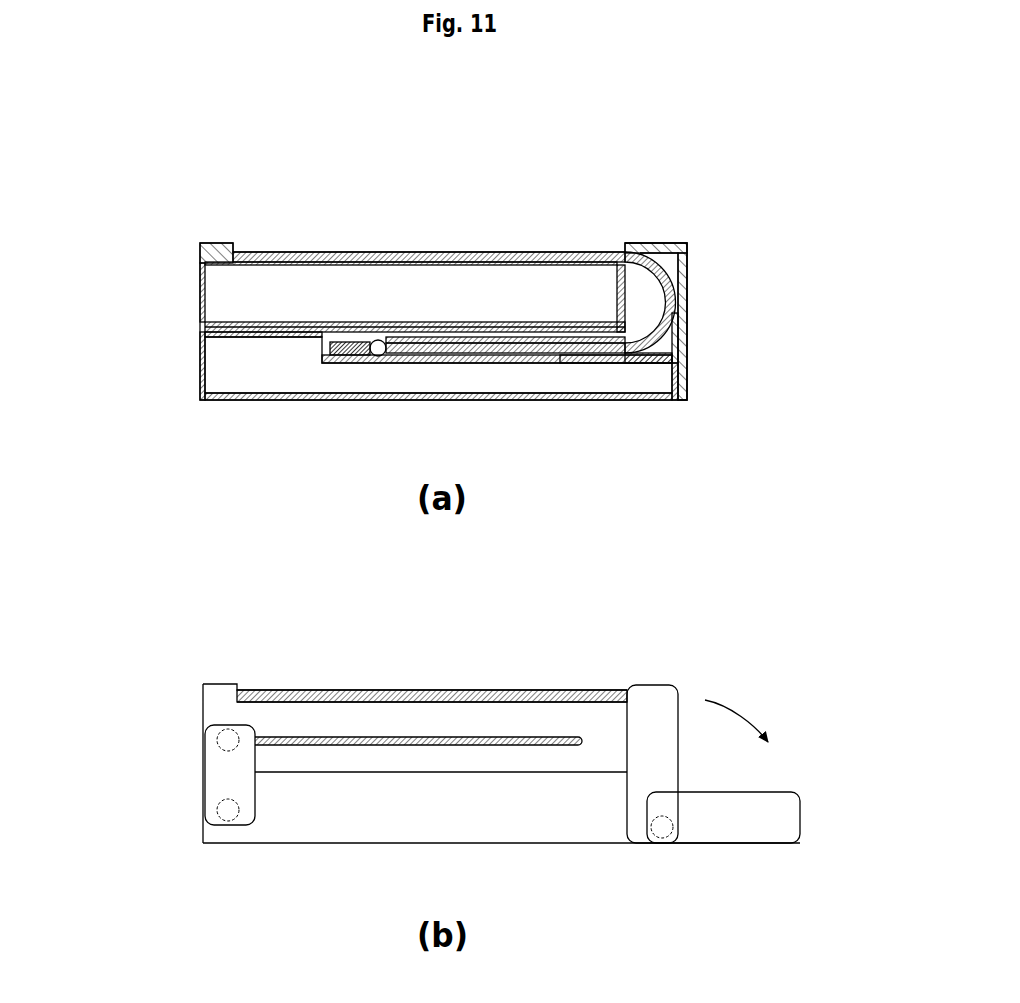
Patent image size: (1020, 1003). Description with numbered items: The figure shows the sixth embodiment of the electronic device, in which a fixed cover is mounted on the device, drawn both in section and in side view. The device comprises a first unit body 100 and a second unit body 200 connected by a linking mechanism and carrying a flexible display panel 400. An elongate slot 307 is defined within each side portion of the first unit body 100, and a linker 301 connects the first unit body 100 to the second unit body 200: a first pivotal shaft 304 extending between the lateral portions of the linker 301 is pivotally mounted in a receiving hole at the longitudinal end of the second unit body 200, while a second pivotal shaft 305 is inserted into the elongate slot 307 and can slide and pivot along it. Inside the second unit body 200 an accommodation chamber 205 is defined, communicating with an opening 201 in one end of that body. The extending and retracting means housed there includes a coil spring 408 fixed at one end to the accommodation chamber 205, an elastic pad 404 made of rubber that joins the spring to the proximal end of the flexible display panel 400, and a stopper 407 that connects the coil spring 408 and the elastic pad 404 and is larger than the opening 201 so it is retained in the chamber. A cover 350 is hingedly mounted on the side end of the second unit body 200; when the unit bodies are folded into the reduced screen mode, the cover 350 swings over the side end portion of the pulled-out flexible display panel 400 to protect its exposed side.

The first unit body 100 is at (180, 275).
The second unit body 200 is at (180, 370).
The opening 201 is at (683, 320).
The accommodation chamber 205 is at (617, 357).
The linker 301 is at (210, 777).
The first pivotal shaft 304 is at (217, 813).
The second pivotal shaft 305 is at (217, 740).
The elongate slot 307 is at (350, 737).
The cover 350 is at (687, 258).
The flexible display panel 400 is at (530, 691).
The elastic pad 404 is at (470, 343).
The stopper 407 is at (378, 340).
The coil spring 408 is at (345, 357).